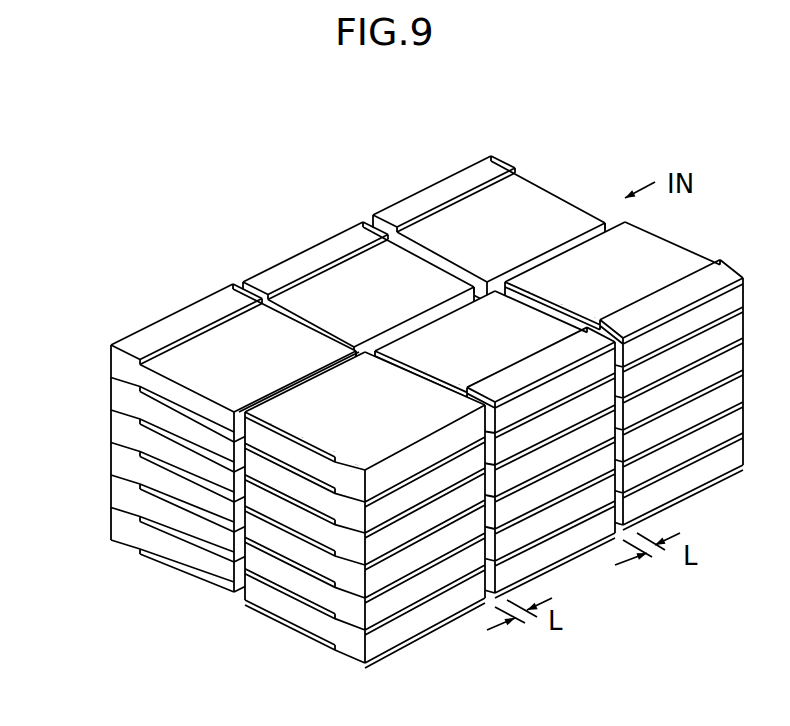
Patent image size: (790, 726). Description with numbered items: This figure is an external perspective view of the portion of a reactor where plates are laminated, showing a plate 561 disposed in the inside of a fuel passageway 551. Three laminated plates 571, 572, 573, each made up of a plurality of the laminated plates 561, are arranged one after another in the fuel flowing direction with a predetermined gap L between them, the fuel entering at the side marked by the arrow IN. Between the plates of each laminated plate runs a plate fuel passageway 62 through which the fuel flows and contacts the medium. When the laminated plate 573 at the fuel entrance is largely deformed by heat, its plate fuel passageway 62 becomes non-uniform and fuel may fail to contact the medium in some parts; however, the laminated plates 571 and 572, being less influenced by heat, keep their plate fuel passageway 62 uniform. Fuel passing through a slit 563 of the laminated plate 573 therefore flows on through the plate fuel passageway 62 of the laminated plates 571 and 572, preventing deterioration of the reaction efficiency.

The fuel passageway 551 is at (382, 383).
The plate 561 is at (417, 527).
The slit 563 is at (316, 378).
The laminated plate 571 is at (228, 347).
The laminated plate 572 is at (357, 280).
The laminated plate 573 is at (488, 215).
The plate fuel passageway 62 is at (158, 463).